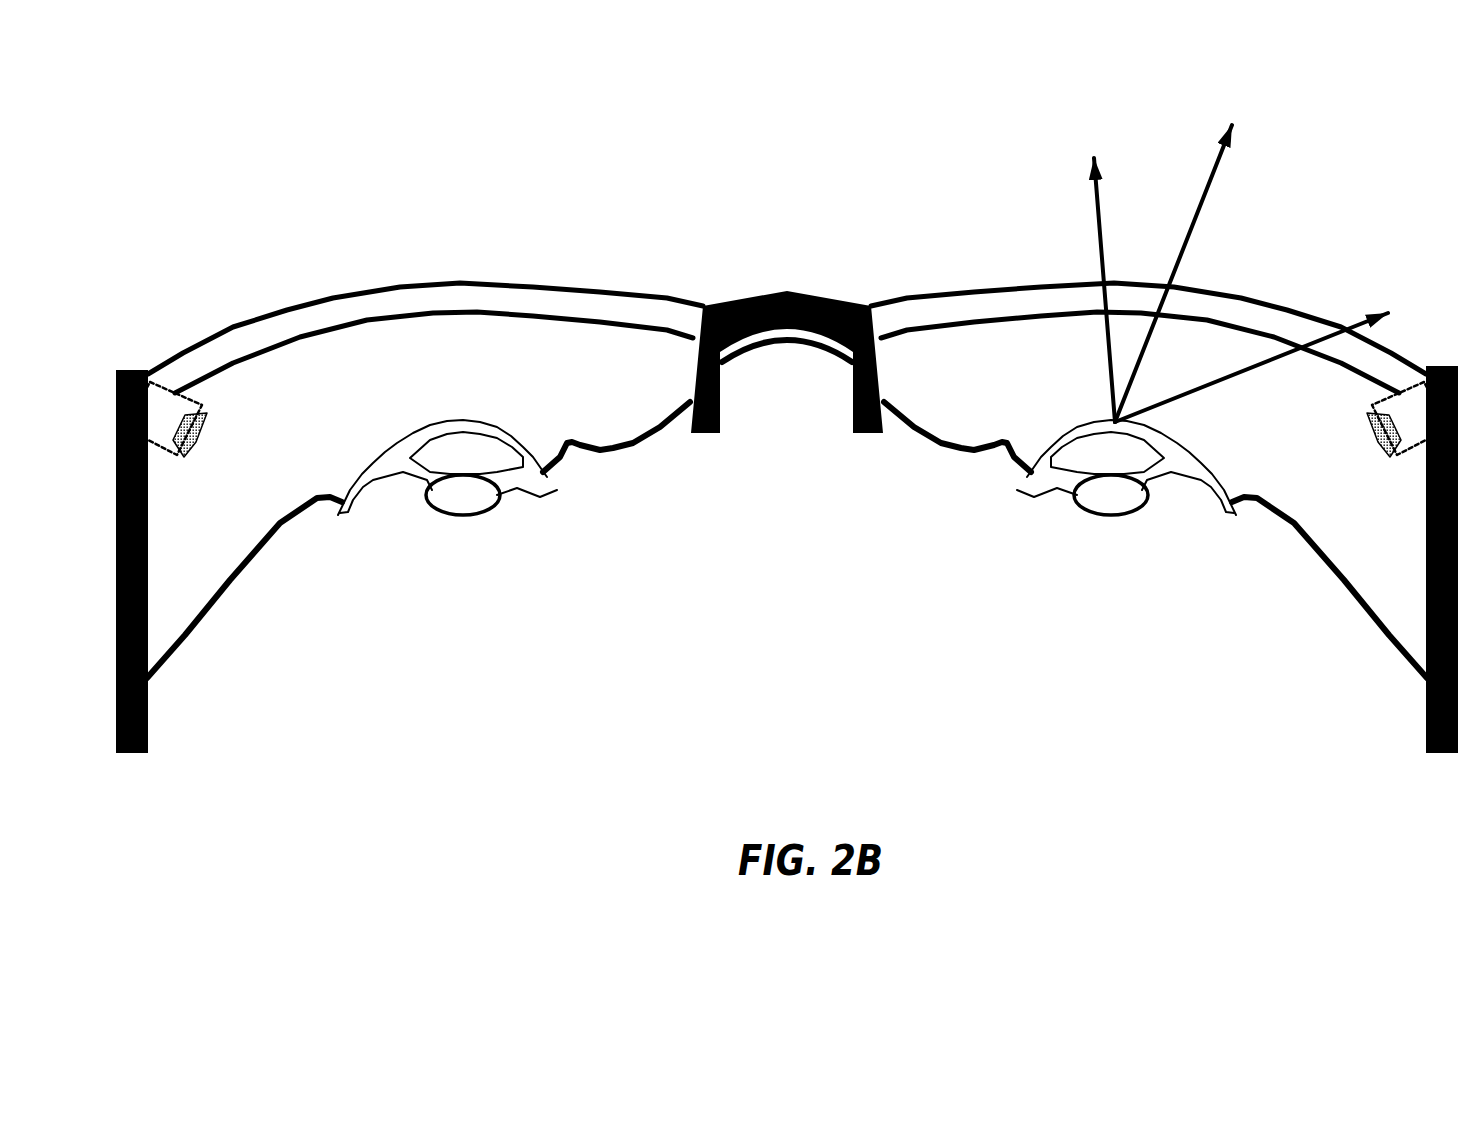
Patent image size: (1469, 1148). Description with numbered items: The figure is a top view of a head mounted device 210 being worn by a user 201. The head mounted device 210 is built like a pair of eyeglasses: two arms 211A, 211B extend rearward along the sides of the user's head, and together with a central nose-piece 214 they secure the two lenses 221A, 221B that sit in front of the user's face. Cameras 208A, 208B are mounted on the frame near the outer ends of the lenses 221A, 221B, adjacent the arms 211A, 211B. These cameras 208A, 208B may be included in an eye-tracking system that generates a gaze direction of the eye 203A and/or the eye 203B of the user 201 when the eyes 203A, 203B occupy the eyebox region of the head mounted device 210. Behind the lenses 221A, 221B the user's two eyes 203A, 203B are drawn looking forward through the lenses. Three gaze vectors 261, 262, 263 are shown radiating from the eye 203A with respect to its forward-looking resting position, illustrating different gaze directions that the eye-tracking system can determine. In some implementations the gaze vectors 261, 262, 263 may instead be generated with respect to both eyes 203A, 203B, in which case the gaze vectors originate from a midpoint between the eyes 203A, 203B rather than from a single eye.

The user 201 is at (784, 491).
The head mounted device 210 is at (784, 545).
The arm 211A is at (1441, 757).
The arm 211B is at (132, 757).
The nose-piece 214 is at (799, 321).
The lens 221A is at (1073, 311).
The lens 221B is at (590, 313).
The camera 208A is at (1442, 425).
The camera 208B is at (177, 425).
The eye 203A is at (1198, 430).
The eye 203B is at (518, 422).
The gaze vector 261 is at (1064, 290).
The gaze vector 262 is at (1202, 273).
The gaze vector 263 is at (1252, 345).